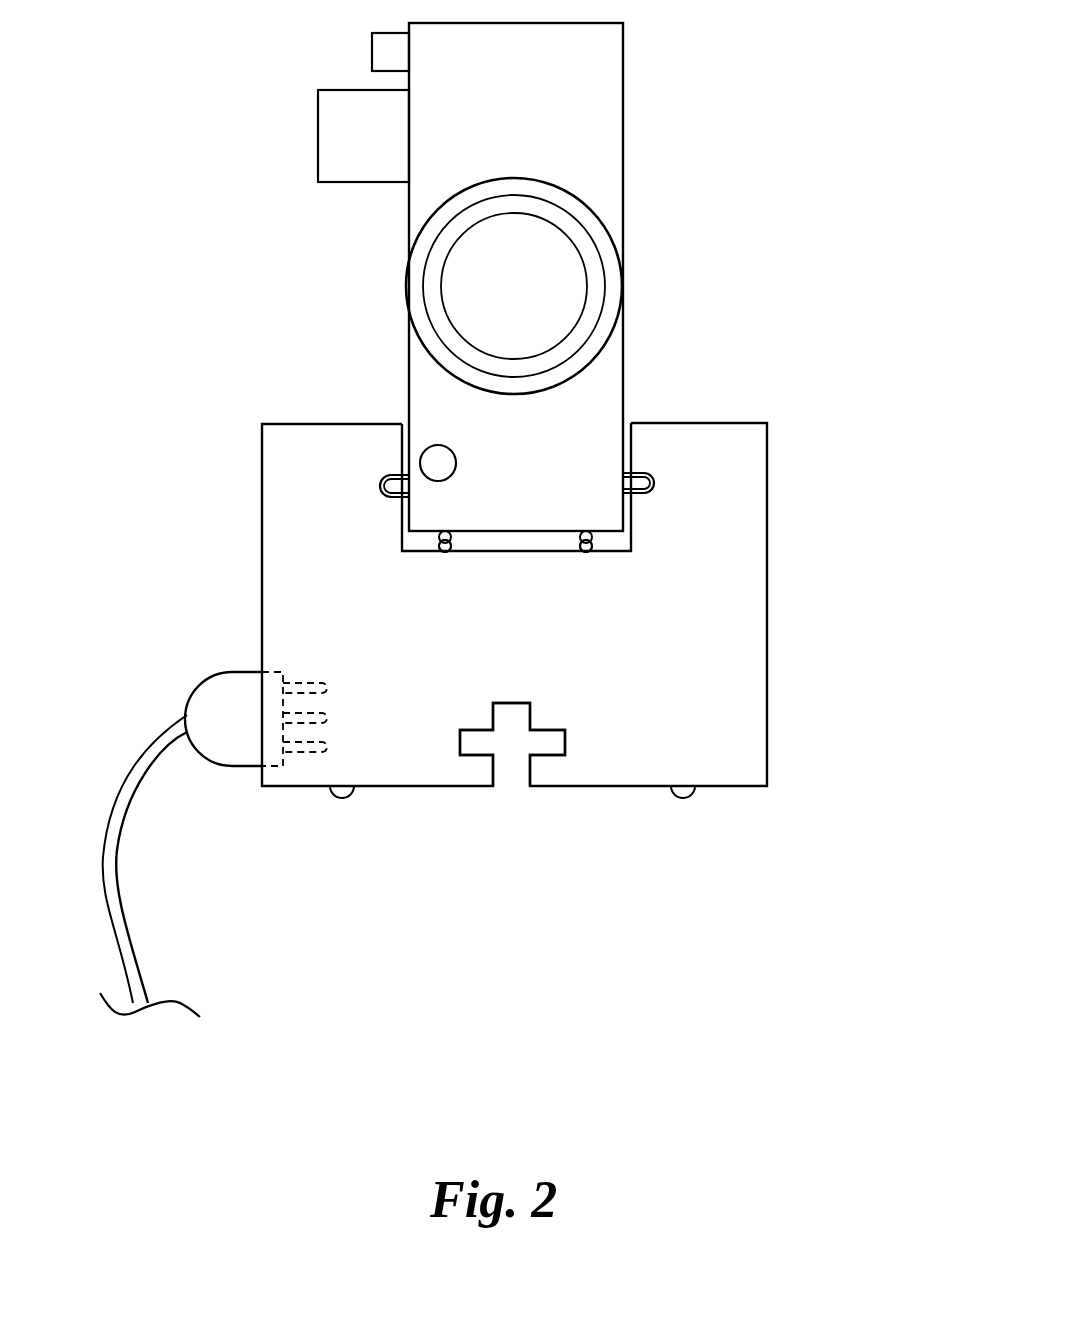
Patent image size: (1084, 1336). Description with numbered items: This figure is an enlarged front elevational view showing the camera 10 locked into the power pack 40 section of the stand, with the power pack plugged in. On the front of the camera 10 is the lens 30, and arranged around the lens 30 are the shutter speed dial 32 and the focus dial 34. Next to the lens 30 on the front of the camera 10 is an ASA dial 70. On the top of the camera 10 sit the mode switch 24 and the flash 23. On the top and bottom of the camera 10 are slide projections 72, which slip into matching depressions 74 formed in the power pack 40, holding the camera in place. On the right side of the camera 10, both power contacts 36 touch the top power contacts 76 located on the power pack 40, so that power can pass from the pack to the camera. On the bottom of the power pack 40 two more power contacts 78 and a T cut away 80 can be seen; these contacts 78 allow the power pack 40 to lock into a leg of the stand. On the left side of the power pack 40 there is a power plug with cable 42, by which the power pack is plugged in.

The camera 10 is at (624, 85).
The flash 23 is at (318, 131).
The mode switch 24 is at (372, 50).
The lens 30 is at (578, 203).
The shutter speed dial 32 is at (600, 320).
The focus dial 34 is at (587, 303).
The power contacts 36 is at (437, 547).
The power pack 40 is at (767, 575).
The power plug with cable 42 is at (232, 672).
The ASA dial 70 is at (437, 445).
The slide projections 72 is at (380, 492).
The depressions 74 is at (383, 476).
The top power contacts 76 is at (447, 553).
The power contacts 78 is at (342, 798).
The T cut away 80 is at (547, 727).